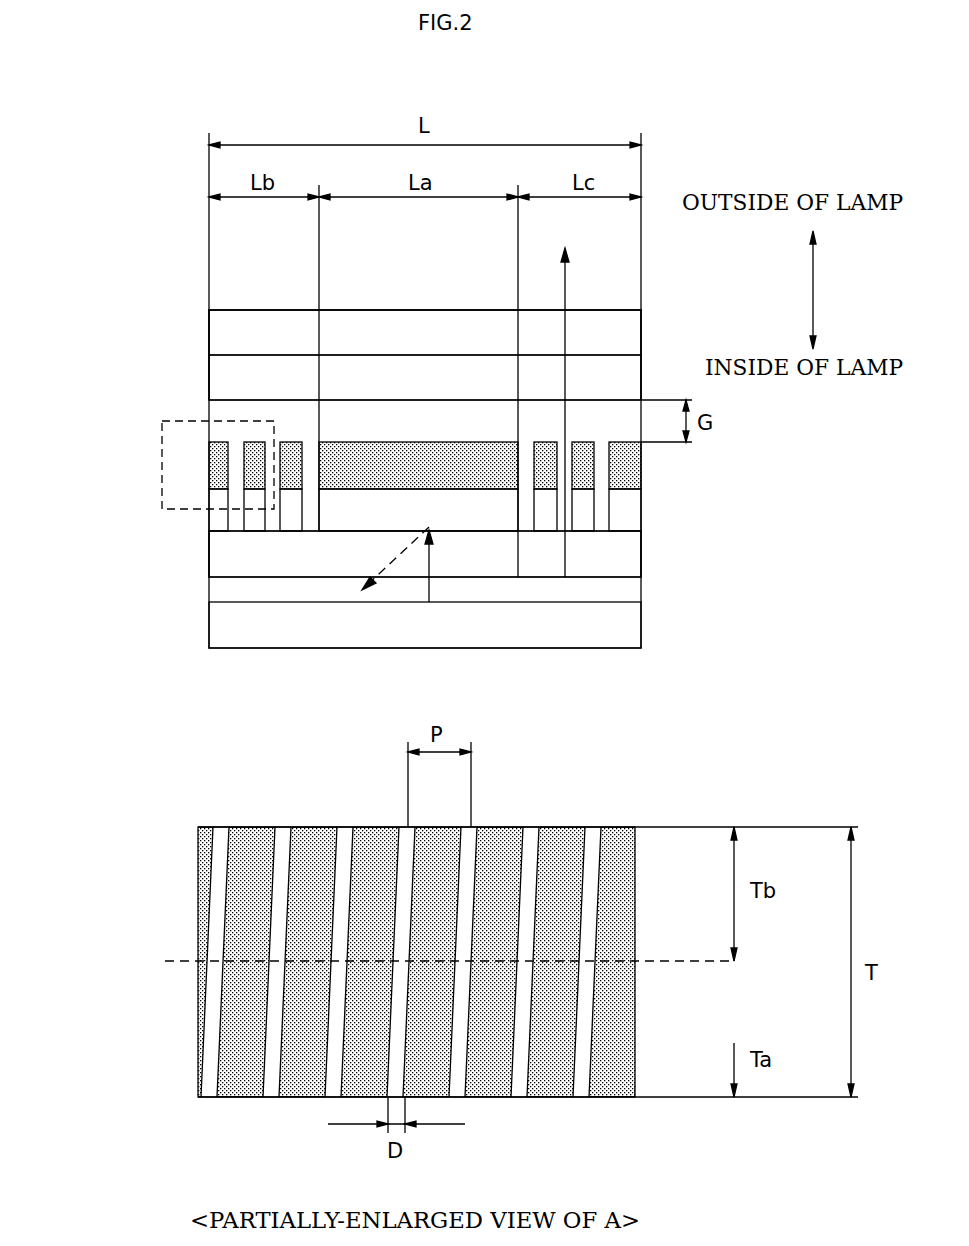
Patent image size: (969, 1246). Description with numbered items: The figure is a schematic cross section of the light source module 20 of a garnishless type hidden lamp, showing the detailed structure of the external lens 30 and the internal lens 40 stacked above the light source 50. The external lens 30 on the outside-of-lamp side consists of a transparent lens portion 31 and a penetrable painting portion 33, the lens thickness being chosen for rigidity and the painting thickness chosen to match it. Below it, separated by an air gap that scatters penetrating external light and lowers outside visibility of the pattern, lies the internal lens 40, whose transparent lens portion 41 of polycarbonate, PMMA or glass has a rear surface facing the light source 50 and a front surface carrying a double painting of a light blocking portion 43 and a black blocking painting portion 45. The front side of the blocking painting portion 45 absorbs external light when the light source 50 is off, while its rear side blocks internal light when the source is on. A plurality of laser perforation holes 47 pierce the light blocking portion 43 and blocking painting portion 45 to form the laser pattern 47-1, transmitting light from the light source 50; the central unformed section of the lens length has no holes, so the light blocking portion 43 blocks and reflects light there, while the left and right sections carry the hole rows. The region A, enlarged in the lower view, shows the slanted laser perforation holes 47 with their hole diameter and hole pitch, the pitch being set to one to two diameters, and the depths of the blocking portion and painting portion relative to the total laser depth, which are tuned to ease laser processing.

The light source module 20 is at (183, 275).
The external lens 30 is at (66, 317).
The transparent lens portion 31 is at (223, 335).
The penetrable painting portion 33 is at (215, 382).
The internal lens 40 is at (768, 470).
The transparent lens portion 41 is at (622, 558).
The light blocking portion 43 is at (627, 514).
The blocking painting portion 45 is at (630, 462).
The laser perforation holes 47 is at (235, 498).
The laser pattern 47-1 is at (180, 845).
The light source 50 is at (220, 628).
The section A is at (162, 468).